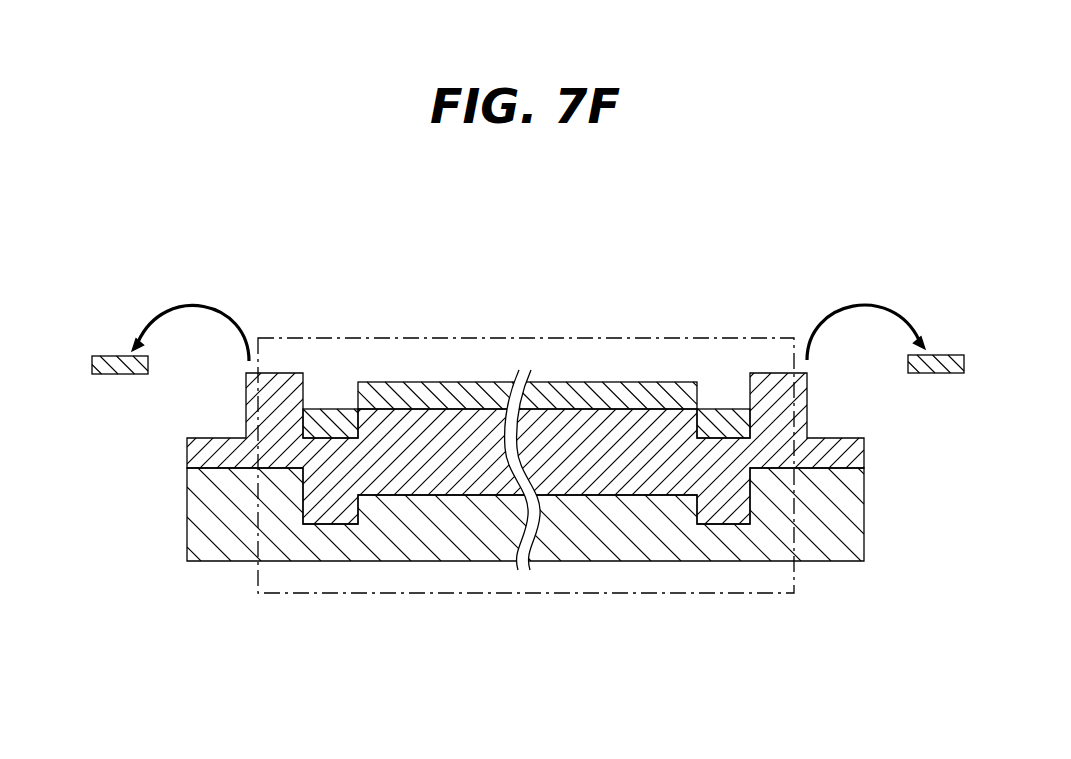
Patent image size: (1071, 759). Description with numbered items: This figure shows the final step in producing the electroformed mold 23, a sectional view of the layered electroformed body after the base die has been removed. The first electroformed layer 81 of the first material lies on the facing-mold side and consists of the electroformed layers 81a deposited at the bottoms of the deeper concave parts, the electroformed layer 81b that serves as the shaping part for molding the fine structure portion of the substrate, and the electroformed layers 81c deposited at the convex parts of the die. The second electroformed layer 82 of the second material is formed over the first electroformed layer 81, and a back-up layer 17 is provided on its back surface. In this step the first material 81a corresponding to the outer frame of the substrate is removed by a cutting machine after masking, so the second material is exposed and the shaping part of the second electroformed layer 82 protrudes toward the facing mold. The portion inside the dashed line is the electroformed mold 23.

The back-up layer 17 is at (852, 530).
The second electroformed layer 82 is at (860, 452).
The first electroformed layer 81 is at (525, 351).
The electroformed layers 81a is at (113, 358).
The electroformed layer 81b is at (612, 395).
The electroformed layers 81c is at (338, 415).
The electroformed mold 23 is at (741, 604).